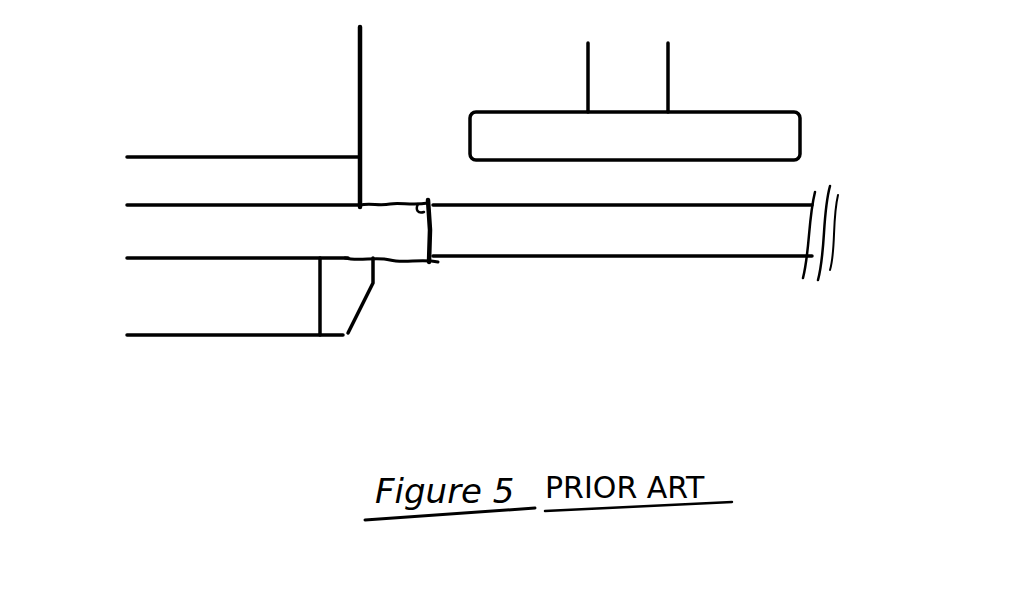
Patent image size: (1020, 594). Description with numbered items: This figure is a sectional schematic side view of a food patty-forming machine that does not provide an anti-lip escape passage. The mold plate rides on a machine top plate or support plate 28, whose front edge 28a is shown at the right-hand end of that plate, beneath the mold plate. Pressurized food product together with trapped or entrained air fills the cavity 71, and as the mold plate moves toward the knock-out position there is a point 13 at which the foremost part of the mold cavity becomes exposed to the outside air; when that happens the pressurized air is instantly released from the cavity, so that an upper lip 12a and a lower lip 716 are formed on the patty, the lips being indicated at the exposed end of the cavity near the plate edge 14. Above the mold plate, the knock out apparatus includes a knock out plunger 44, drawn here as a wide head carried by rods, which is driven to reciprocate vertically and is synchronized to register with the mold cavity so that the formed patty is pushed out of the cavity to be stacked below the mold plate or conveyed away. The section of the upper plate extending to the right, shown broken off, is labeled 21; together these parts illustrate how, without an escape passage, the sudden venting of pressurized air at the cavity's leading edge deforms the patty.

The cavity 71 is at (173, 237).
The vertical wall 13 is at (371, 198).
The thin wall section 12a is at (402, 204).
The flange 14 is at (422, 197).
The lower wall portion 716 is at (422, 274).
The pipe 21 is at (738, 245).
The support plate 28 is at (296, 318).
The front edge of the support plate 28a is at (340, 310).
The knock out plunger 44 is at (777, 120).